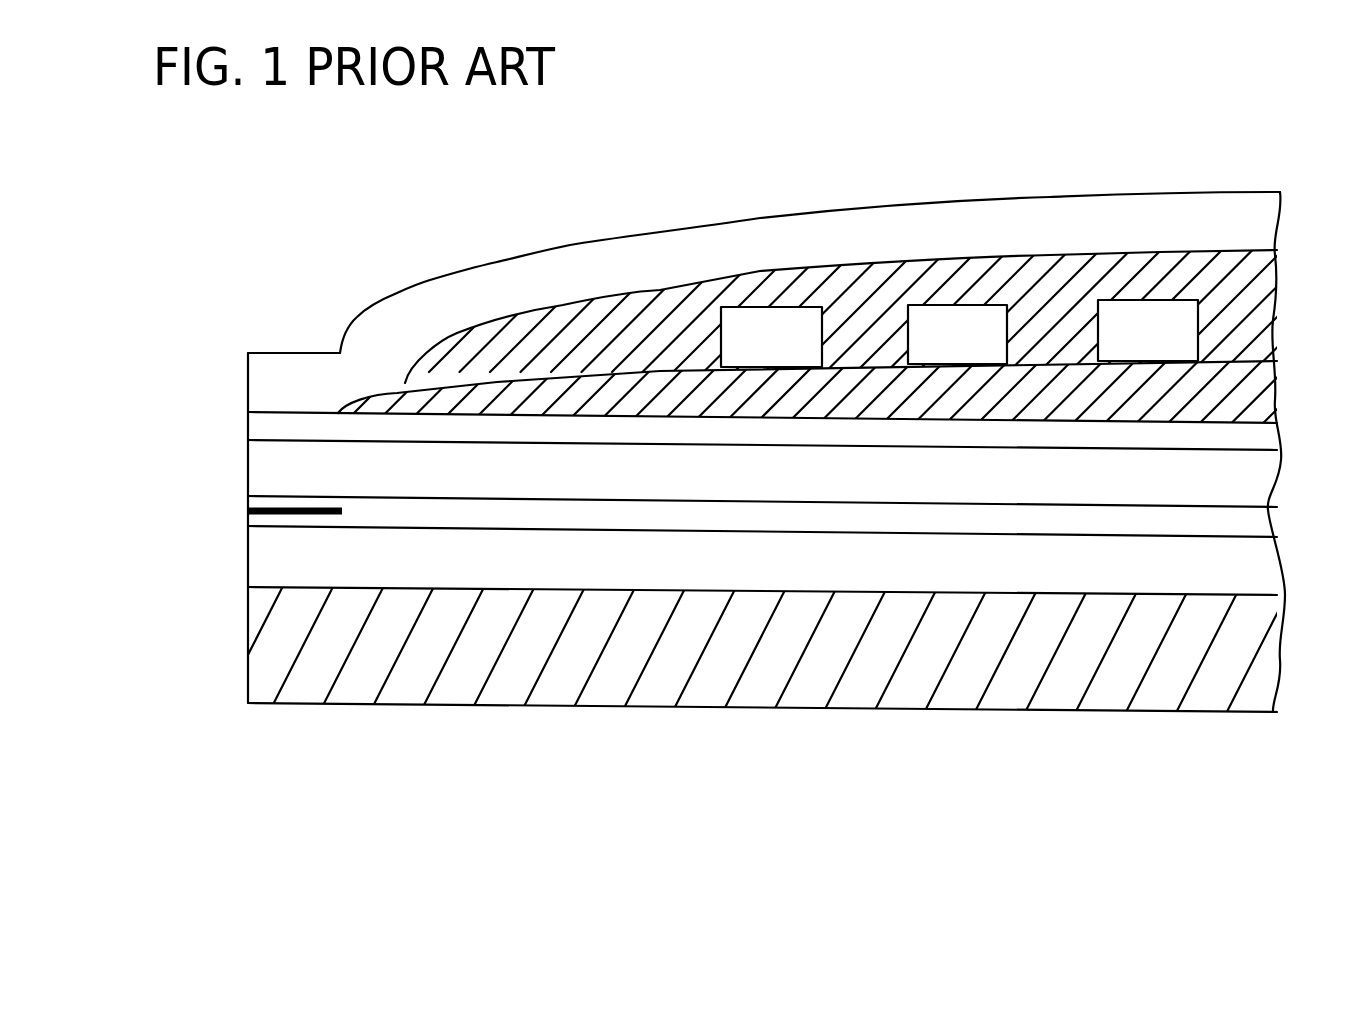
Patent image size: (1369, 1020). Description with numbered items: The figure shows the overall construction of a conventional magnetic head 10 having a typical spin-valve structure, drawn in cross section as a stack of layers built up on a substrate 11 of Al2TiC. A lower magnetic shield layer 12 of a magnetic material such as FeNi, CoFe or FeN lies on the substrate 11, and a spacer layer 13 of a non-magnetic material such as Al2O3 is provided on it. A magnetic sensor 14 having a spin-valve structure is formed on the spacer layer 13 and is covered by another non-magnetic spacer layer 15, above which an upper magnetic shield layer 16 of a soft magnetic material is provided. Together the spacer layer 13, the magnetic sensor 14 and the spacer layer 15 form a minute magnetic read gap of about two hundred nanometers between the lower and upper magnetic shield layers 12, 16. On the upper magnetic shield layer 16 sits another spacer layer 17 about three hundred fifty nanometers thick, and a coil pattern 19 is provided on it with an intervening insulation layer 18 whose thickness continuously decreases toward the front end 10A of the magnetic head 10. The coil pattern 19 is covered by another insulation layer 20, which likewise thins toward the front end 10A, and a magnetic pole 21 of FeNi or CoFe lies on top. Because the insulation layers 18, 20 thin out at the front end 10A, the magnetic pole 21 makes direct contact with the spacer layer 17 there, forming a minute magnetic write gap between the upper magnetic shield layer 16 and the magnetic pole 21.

The magnetic head 10 is at (760, 90).
The front end 10A is at (253, 722).
The substrate 11 is at (1258, 665).
The lower magnetic shield layer 12 is at (1265, 565).
The spacer layer 13 is at (248, 521).
The magnetic sensor 14 is at (247, 511).
The spacer layer 15 is at (256, 503).
The upper magnetic shield layer 16 is at (1265, 488).
The spacer layer 17 is at (256, 430).
The insulation layer 18 is at (1265, 391).
The coil pattern 19 is at (1117, 300).
The insulation layer 20 is at (1265, 309).
The magnetic pole 21 is at (1178, 200).